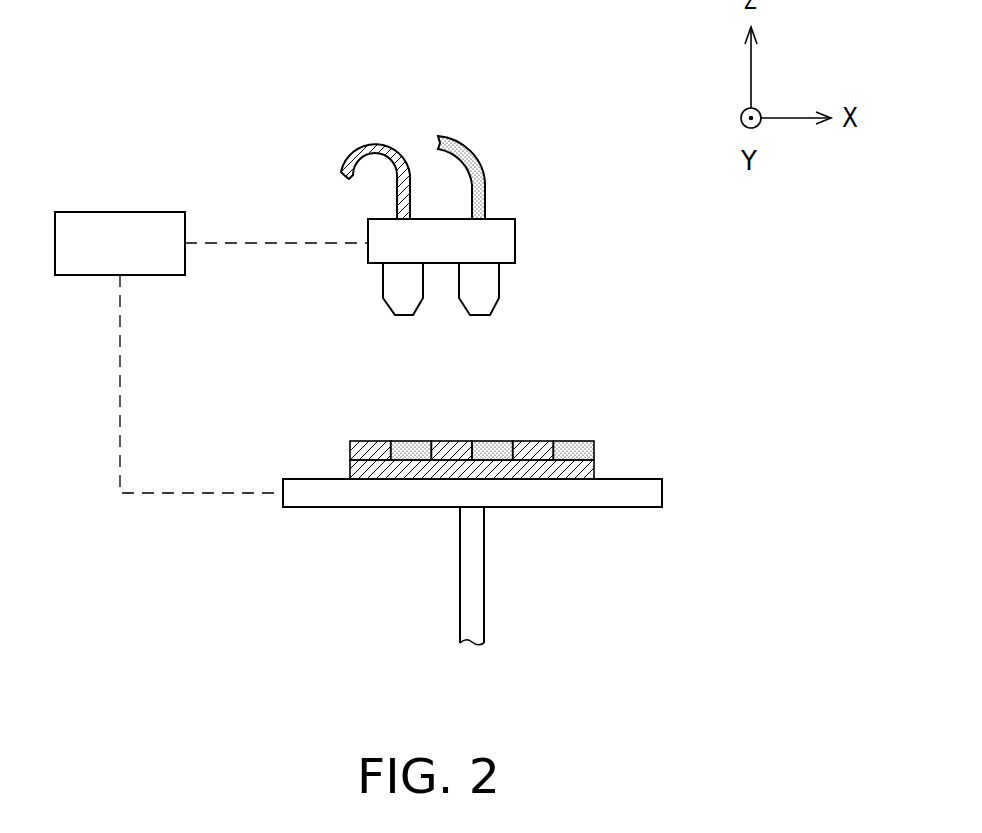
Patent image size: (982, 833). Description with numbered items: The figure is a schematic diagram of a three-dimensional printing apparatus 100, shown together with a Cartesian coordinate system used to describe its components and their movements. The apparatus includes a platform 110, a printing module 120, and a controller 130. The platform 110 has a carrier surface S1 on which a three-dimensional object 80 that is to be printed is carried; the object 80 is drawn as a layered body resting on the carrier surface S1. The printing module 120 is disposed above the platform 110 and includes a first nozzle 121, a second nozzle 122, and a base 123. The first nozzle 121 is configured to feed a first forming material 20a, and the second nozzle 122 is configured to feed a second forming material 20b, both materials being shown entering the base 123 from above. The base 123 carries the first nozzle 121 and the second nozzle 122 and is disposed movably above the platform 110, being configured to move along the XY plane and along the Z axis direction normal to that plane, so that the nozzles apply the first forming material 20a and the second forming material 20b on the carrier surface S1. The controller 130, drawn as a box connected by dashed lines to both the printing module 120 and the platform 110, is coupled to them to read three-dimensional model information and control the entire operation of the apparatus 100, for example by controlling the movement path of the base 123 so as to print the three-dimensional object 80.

The three-dimensional printing apparatus 100 is at (720, 682).
The platform 110 is at (662, 493).
The printing module 120 is at (529, 269).
The first nozzle 121 is at (499, 280).
The second nozzle 122 is at (418, 306).
The base 123 is at (515, 241).
The controller 130 is at (120, 212).
The first forming material 20a is at (467, 138).
The second forming material 20b is at (373, 143).
The three-dimensional object 80 is at (368, 441).
The carrier surface S1 is at (628, 465).